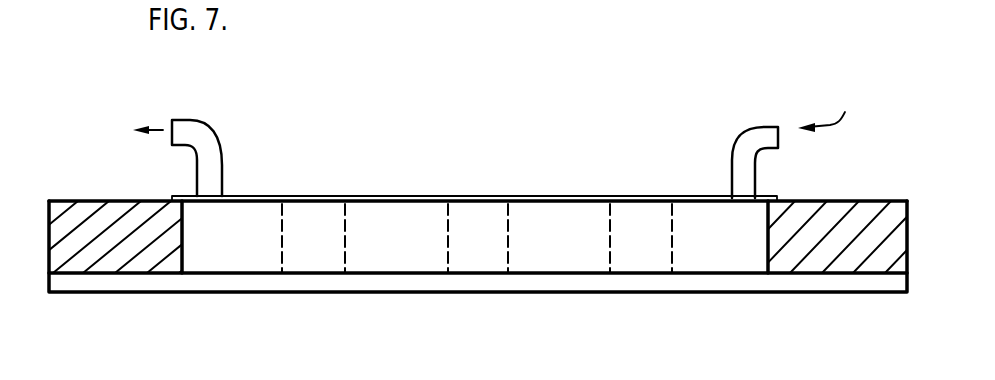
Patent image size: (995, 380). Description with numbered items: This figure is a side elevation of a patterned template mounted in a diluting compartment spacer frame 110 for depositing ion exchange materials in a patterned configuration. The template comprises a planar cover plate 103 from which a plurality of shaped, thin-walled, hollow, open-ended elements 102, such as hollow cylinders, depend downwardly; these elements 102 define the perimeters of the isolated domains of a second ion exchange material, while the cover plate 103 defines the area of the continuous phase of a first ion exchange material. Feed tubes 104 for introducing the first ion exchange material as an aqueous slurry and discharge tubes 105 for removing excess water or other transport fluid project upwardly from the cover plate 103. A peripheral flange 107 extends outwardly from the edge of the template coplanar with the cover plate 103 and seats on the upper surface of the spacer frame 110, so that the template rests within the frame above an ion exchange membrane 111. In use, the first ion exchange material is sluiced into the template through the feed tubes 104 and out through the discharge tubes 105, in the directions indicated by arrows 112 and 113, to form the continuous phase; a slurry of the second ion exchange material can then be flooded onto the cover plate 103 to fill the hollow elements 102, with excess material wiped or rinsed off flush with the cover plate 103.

The hollow open-ended elements 102 is at (472, 210).
The cover plate 103 is at (577, 198).
The feed tubes 104 is at (752, 128).
The discharge tubes 105 is at (205, 131).
The peripheral flange 107 is at (775, 196).
The diluting compartment spacer frame 110 is at (867, 226).
The ion exchange membrane 111 is at (843, 285).
The arrow 112 is at (839, 105).
The arrow 113 is at (155, 132).